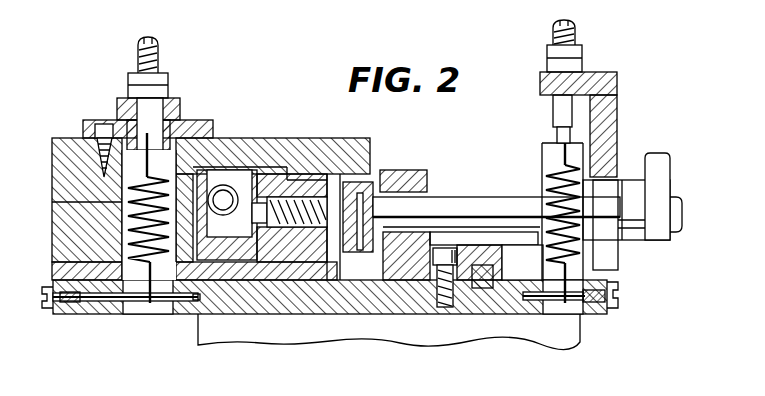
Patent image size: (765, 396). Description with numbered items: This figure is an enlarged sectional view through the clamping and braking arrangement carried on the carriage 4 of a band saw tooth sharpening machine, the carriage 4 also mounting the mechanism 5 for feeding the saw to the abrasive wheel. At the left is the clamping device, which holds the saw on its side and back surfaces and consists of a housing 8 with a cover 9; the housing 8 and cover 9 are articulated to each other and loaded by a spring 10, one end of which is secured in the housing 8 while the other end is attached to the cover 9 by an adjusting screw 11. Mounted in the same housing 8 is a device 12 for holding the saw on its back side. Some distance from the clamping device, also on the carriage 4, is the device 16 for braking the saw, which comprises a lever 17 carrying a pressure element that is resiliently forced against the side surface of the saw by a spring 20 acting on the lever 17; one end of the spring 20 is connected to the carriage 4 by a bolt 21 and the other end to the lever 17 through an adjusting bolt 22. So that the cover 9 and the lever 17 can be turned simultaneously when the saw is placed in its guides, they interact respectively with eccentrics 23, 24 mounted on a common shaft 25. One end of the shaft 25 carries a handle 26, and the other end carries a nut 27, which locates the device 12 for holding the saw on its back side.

The carriage 4 is at (512, 316).
The mechanism for feeding the saw 5 is at (582, 323).
The housing 8 is at (53, 238).
The cover 9 is at (74, 138).
The spring 10 is at (148, 284).
The adjusting screw 11 is at (160, 52).
The device for holding the saw on the back side 12 is at (223, 180).
The device for braking the saw 16 is at (600, 72).
The lever 17 is at (617, 93).
The spring 20 is at (543, 173).
The bolt 21 is at (619, 295).
The adjusting bolt 22 is at (553, 33).
The eccentric 23 is at (617, 260).
The eccentric 24 is at (352, 254).
The shaft 25 is at (450, 207).
The handle 26 is at (657, 163).
The nut 27 is at (281, 178).